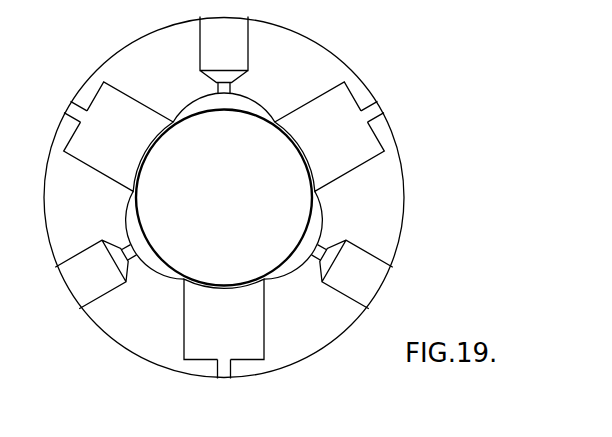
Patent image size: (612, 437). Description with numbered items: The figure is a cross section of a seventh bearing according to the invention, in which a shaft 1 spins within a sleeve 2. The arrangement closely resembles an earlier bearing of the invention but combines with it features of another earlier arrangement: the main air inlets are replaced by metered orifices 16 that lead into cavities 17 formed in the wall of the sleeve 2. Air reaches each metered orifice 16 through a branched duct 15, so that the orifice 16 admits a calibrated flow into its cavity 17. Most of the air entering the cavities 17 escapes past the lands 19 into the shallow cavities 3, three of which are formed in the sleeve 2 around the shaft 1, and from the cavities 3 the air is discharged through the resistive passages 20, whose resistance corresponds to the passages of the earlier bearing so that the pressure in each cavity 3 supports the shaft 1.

The shaft 1 is at (236, 199).
The sleeve 2 is at (312, 66).
The cavities 3 is at (338, 148).
The duct 15 is at (237, 53).
The metered orifices 16 is at (215, 88).
The cavities 17 is at (223, 102).
The lands 19 is at (173, 117).
The resistive passages 20 is at (72, 110).